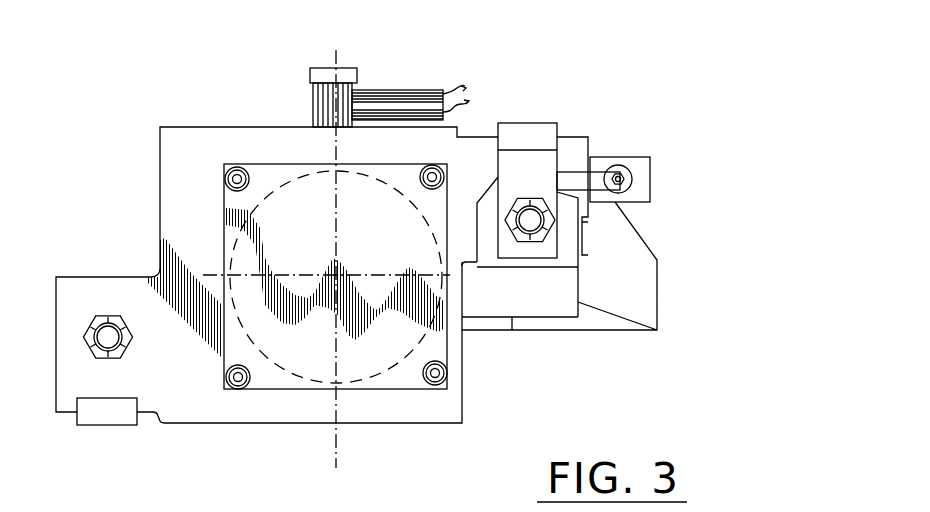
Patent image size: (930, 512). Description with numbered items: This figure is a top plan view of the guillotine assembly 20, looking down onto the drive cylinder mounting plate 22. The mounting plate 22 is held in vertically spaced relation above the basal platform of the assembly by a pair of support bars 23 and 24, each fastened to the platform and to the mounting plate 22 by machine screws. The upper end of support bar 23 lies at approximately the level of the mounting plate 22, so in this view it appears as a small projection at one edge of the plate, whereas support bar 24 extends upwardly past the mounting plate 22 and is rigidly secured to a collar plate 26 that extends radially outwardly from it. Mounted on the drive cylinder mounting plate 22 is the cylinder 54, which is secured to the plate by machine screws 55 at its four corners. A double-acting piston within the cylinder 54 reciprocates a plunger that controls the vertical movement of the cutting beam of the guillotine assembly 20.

The guillotine assembly 20 is at (356, 237).
The drive cylinder mounting plate 22 is at (177, 197).
The support bar 23 is at (115, 415).
The support bar 24 is at (543, 137).
The collar plate 26 is at (613, 136).
The cylinder 54 is at (363, 367).
The machine screws 55 is at (240, 170).